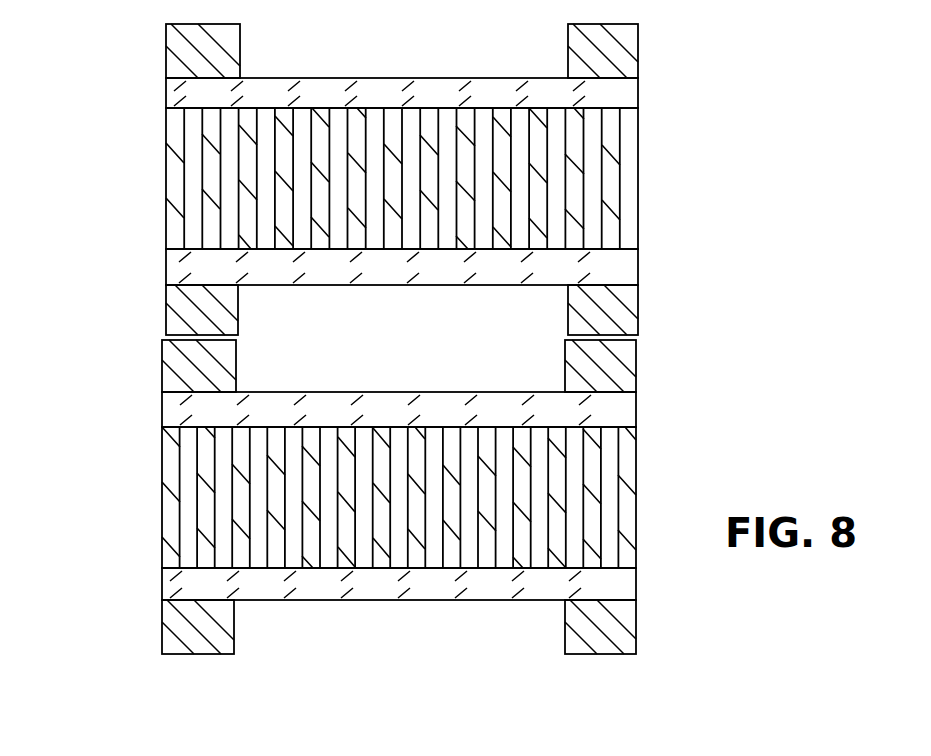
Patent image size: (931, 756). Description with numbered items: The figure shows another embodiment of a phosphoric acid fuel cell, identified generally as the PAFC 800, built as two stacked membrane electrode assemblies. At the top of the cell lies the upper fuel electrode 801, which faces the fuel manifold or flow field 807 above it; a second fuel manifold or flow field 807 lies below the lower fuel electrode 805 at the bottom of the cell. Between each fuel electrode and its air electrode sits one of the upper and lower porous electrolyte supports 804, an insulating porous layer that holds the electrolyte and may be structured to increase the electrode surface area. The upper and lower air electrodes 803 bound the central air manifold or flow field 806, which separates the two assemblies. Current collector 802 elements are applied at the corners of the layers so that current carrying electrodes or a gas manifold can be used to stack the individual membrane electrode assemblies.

The phosphoric acid fuel cell 800 is at (689, 77).
The upper fuel electrode 801 is at (166, 98).
The current collector 802 is at (166, 60).
The upper and lower air electrodes 803 is at (168, 280).
The upper and lower porous electrolyte supports 804 is at (166, 183).
The lower fuel electrode 805 is at (162, 585).
The air manifold or flow field 806 is at (430, 354).
The fuel manifold or flow field 807 is at (430, 54).